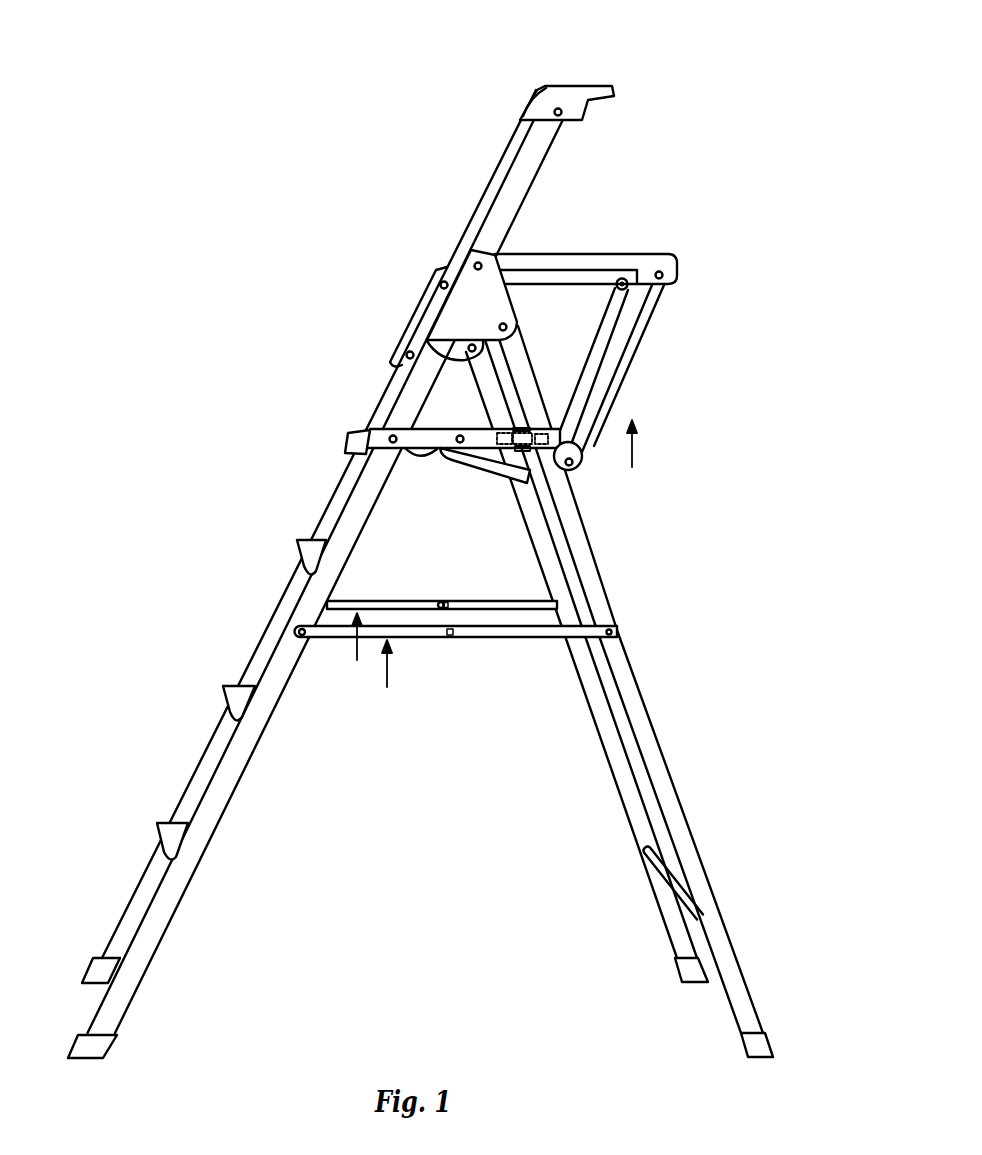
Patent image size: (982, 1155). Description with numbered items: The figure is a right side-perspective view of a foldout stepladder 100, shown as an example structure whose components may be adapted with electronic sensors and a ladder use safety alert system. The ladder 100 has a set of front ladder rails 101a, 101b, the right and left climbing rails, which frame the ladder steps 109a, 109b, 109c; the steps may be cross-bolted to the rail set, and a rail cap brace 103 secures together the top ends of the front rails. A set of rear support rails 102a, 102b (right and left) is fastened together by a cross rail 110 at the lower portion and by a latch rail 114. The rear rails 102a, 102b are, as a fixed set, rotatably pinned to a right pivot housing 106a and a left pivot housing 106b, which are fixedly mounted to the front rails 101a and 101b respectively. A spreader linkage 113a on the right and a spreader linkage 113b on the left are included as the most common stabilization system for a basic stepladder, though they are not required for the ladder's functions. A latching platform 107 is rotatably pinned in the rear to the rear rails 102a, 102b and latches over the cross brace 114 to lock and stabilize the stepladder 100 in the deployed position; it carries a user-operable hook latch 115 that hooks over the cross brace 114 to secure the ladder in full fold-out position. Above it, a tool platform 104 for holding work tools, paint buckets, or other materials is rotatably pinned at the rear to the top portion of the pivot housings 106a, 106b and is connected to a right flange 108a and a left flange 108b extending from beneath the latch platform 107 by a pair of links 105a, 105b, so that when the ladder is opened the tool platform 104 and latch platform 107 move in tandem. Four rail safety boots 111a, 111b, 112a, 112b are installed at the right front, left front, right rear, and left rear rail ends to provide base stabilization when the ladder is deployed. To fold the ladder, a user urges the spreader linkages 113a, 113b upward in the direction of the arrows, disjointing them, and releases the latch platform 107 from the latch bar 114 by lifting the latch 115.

The foldout stepladder 100 is at (270, 144).
The front ladder rail (right rail) 101a is at (303, 652).
The front ladder rail (left rail) 101b is at (267, 618).
The rear support rail (right support rail) 102a is at (603, 653).
The rear support rail (left support rail) 102b is at (586, 657).
The rail cap brace 103 is at (585, 85).
The tool platform 104 is at (585, 253).
The link (right link) 105a is at (600, 403).
The link (left link) 105b is at (582, 358).
The right pivot housing 106a is at (443, 268).
The left pivot housing 106b is at (410, 317).
The latching platform 107 is at (378, 426).
The right flange 108a is at (533, 485).
The left flange 108b is at (478, 476).
The ladder step 109a is at (157, 845).
The ladder step 109b is at (222, 698).
The ladder step 109c is at (300, 558).
The cross rail 110 is at (655, 870).
The rail safety boot (right front) 111a is at (113, 1048).
The rail safety boot (left front) 111b is at (112, 962).
The rail safety boot (right rear) 112a is at (743, 1047).
The rail safety boot (left rear) 112b is at (680, 970).
The spreader linkage (right spreader) 113a is at (456, 659).
The spreader linkage (left spreader) 113b is at (447, 602).
The latch rail (cross brace) 114 is at (580, 487).
The hook latch 115 is at (520, 429).